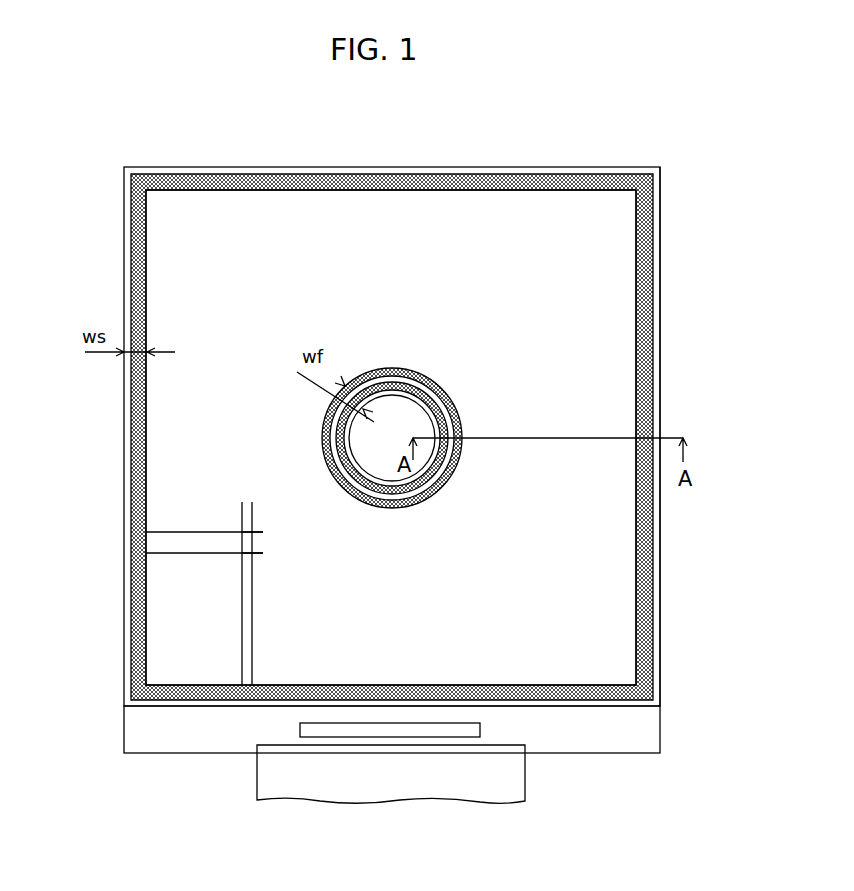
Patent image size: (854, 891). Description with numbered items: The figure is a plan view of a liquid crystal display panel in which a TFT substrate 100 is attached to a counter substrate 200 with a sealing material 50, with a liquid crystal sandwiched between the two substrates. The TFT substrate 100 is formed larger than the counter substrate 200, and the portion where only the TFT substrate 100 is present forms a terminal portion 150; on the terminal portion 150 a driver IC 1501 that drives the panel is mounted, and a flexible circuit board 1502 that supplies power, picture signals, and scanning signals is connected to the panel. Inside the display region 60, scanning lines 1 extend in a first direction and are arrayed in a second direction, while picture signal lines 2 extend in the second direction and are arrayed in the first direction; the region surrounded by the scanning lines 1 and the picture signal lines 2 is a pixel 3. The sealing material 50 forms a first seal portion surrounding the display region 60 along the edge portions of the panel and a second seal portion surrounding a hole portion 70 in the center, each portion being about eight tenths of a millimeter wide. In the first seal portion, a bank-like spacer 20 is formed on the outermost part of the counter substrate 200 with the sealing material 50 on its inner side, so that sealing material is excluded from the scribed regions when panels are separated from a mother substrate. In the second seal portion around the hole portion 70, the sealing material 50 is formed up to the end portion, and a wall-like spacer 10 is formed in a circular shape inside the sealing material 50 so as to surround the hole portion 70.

The scanning line 1 is at (200, 532).
The picture signal line 2 is at (253, 590).
The pixel 3 is at (252, 543).
The wall-like spacer 10 is at (435, 388).
The bank-like spacer 20 is at (657, 298).
The sealing material 50 is at (642, 262).
The display region 60 is at (185, 300).
The hole portion 70 is at (392, 438).
The TFT substrate 100 is at (660, 733).
The terminal portion 150 is at (622, 745).
The counter substrate 200 is at (662, 401).
The driver IC 1501 is at (339, 733).
The flexible circuit board 1502 is at (515, 780).